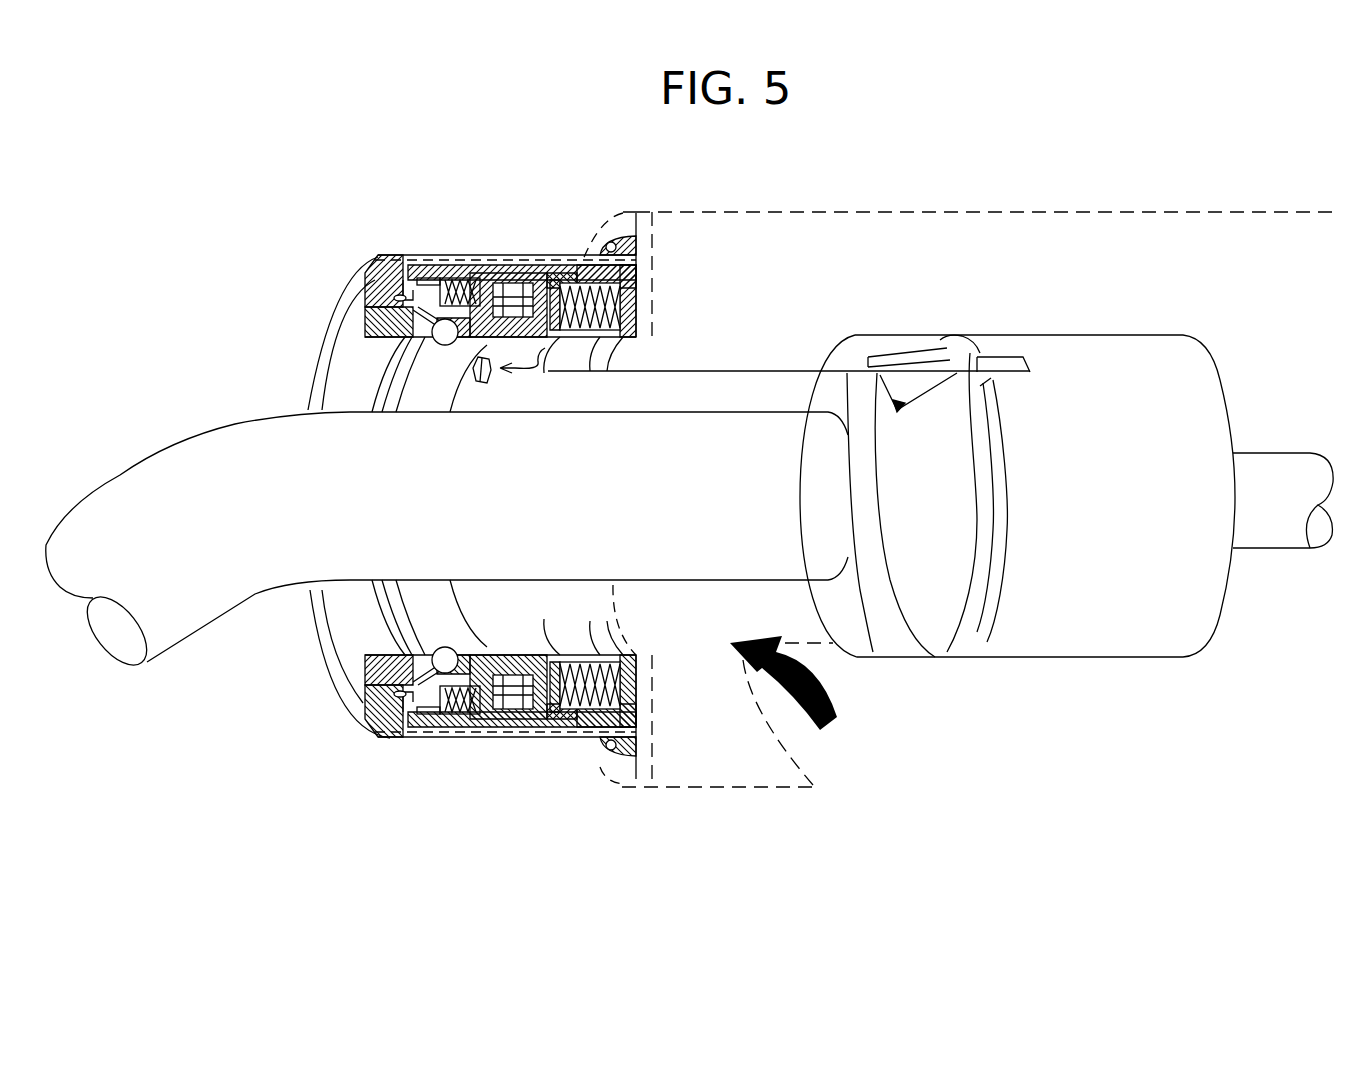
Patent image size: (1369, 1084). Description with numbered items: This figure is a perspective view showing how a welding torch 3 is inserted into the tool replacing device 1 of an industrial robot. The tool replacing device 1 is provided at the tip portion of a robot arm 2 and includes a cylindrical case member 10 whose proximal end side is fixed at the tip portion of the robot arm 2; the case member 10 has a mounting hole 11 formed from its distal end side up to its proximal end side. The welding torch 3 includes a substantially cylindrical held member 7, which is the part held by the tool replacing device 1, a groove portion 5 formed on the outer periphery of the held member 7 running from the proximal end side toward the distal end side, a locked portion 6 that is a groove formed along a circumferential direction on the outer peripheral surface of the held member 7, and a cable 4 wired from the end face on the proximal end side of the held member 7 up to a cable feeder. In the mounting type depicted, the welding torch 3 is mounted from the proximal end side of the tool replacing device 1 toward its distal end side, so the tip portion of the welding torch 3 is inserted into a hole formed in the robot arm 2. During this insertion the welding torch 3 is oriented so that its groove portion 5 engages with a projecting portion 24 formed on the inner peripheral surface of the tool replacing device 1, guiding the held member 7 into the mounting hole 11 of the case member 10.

The tool replacing device 1 is at (357, 813).
The robot arm 2 is at (922, 212).
The welding torch 3 is at (1118, 332).
The cable 4 is at (1266, 473).
The groove portion 5 is at (1000, 358).
The locked portion 6 is at (982, 455).
The held member 7 is at (1085, 608).
The case member 10 is at (505, 737).
The mounting hole 11 is at (357, 622).
The projecting portion 24 is at (470, 365).